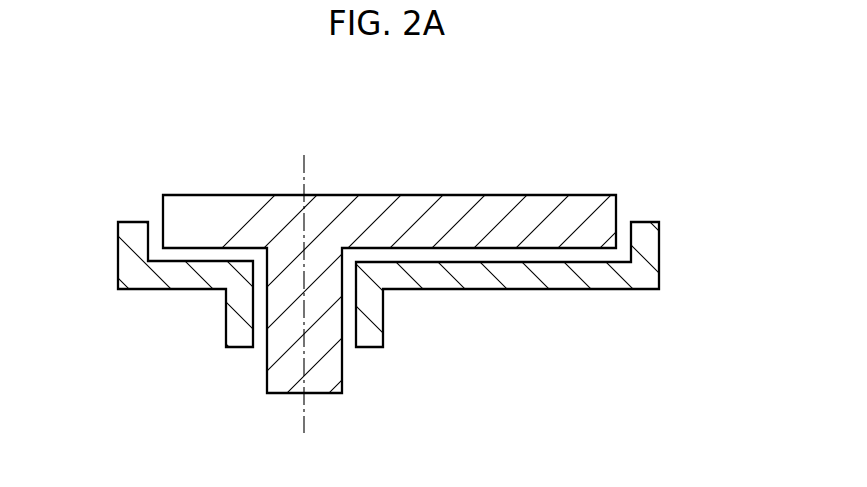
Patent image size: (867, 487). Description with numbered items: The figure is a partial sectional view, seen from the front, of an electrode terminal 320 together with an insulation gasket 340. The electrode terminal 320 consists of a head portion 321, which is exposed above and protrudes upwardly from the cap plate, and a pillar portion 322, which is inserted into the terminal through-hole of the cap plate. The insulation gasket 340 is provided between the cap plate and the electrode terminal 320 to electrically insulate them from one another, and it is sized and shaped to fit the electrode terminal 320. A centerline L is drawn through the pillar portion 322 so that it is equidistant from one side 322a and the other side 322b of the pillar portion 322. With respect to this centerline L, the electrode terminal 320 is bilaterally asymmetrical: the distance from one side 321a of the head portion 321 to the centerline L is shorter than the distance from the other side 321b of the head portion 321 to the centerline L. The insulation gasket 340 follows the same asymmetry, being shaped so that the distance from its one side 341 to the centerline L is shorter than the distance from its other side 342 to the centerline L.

The electrode terminal 320 is at (468, 254).
The head portion 321 is at (472, 213).
The one side of the head portion 321a is at (162, 213).
The other side of the head portion 321b is at (617, 210).
The pillar portion 322 is at (323, 318).
The one side of the pillar portion 322a is at (267, 363).
The other side of the pillar portion 322b is at (342, 363).
The insulation gasket 340 is at (433, 312).
The one side of the insulation gasket 341 is at (118, 251).
The other side of the insulation gasket 342 is at (660, 253).
The centerline L is at (304, 278).